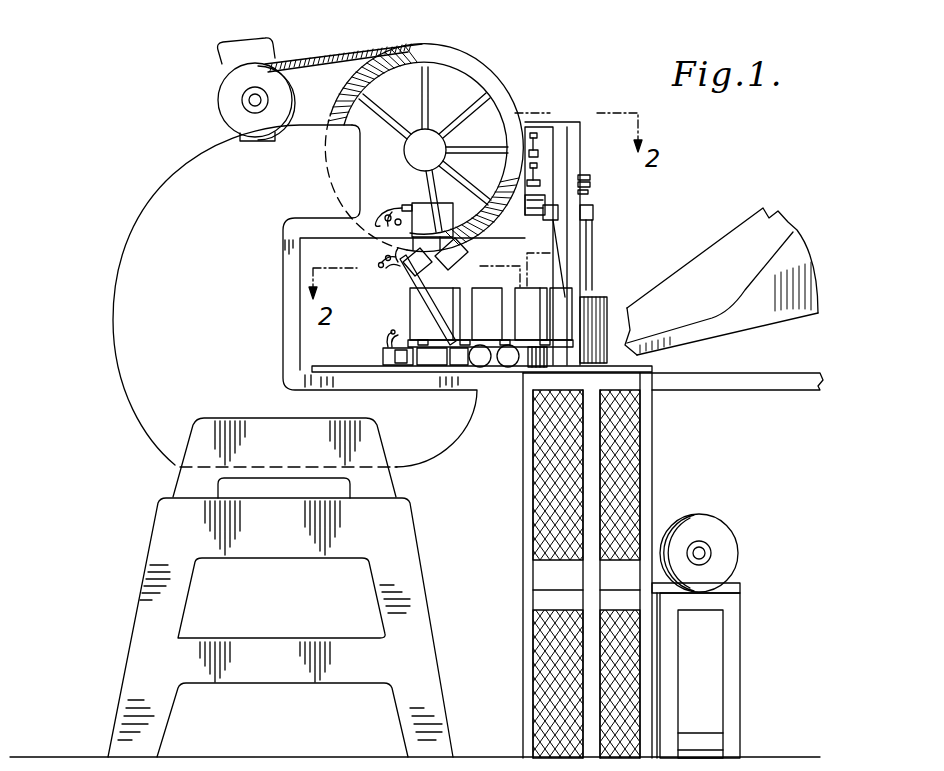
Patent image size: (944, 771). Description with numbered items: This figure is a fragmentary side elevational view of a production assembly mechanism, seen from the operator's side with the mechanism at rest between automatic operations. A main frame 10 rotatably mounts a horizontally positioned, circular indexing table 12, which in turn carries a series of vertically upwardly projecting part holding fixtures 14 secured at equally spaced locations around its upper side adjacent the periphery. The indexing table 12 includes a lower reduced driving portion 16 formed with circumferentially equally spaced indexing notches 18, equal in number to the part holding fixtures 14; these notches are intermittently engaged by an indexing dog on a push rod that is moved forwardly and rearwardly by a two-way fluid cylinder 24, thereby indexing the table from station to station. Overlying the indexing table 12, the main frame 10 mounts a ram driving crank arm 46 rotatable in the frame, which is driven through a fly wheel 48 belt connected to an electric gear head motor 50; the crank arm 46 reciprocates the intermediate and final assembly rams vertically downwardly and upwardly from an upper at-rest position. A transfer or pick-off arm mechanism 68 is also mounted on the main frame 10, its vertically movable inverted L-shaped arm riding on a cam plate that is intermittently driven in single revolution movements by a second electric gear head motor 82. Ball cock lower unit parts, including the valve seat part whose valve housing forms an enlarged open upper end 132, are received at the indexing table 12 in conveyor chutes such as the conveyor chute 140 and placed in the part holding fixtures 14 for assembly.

The main frame 10 is at (125, 398).
The indexing table 12 is at (535, 368).
The part holding fixtures 14 is at (410, 307).
The lower reduced driving portion 16 is at (432, 362).
The indexing notches 18 is at (448, 363).
The two-way fluid cylinder 24 is at (483, 362).
The ram driving crank arm 46 is at (420, 157).
The fly wheel 48 is at (487, 72).
The electric gear head motor 50 is at (223, 103).
The pick-off arm mechanism 68 is at (592, 230).
The electric gear head motor 82 is at (708, 522).
The enlarged open upper end 132 is at (797, 283).
The conveyor chute 140 is at (765, 230).